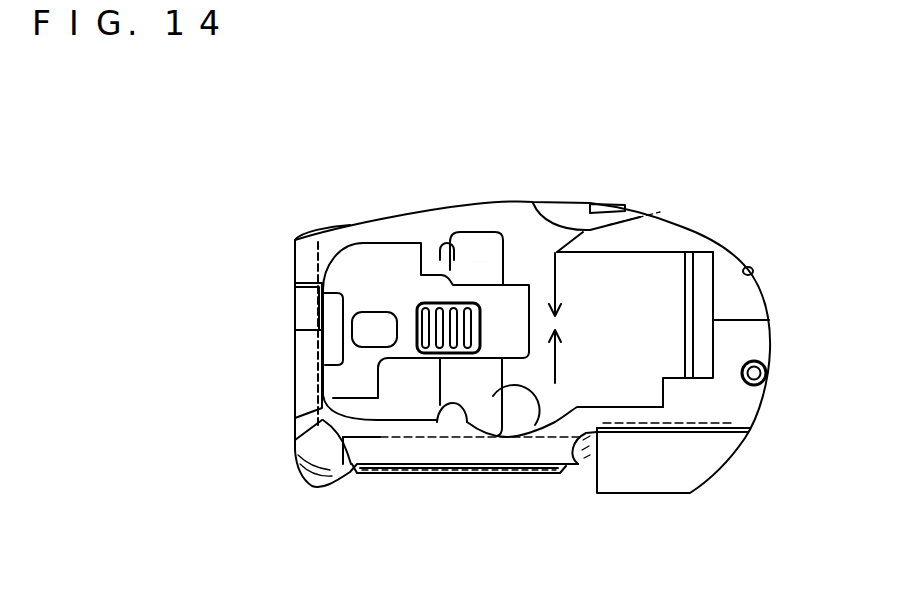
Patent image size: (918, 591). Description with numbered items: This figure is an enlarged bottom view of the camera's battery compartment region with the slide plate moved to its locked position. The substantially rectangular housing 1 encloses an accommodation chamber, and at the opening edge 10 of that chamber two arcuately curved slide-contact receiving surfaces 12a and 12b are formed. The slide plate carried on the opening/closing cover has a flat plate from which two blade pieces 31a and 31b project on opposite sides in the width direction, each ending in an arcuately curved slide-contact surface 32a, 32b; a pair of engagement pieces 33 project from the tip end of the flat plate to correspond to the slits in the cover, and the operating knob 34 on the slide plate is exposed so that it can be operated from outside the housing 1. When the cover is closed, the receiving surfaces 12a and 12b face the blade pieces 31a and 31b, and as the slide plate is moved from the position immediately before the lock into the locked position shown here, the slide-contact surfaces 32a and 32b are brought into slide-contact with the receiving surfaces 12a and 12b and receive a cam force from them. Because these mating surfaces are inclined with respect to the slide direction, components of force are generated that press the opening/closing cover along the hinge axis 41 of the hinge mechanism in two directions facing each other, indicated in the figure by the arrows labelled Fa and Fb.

The housing 1 is at (303, 255).
The opening edge 10 is at (384, 416).
The engagement pieces 33 is at (350, 278).
The slide-contact receiving surface 12b is at (442, 257).
The slide-contact receiving surface 12a is at (440, 412).
The slide-contact surface 32b is at (470, 232).
The blade piece 31b is at (483, 245).
The operating knob 34 is at (467, 325).
The slide-contact surface 32a is at (477, 412).
The blade piece 31a is at (500, 390).
The hinge axis 41 is at (685, 326).